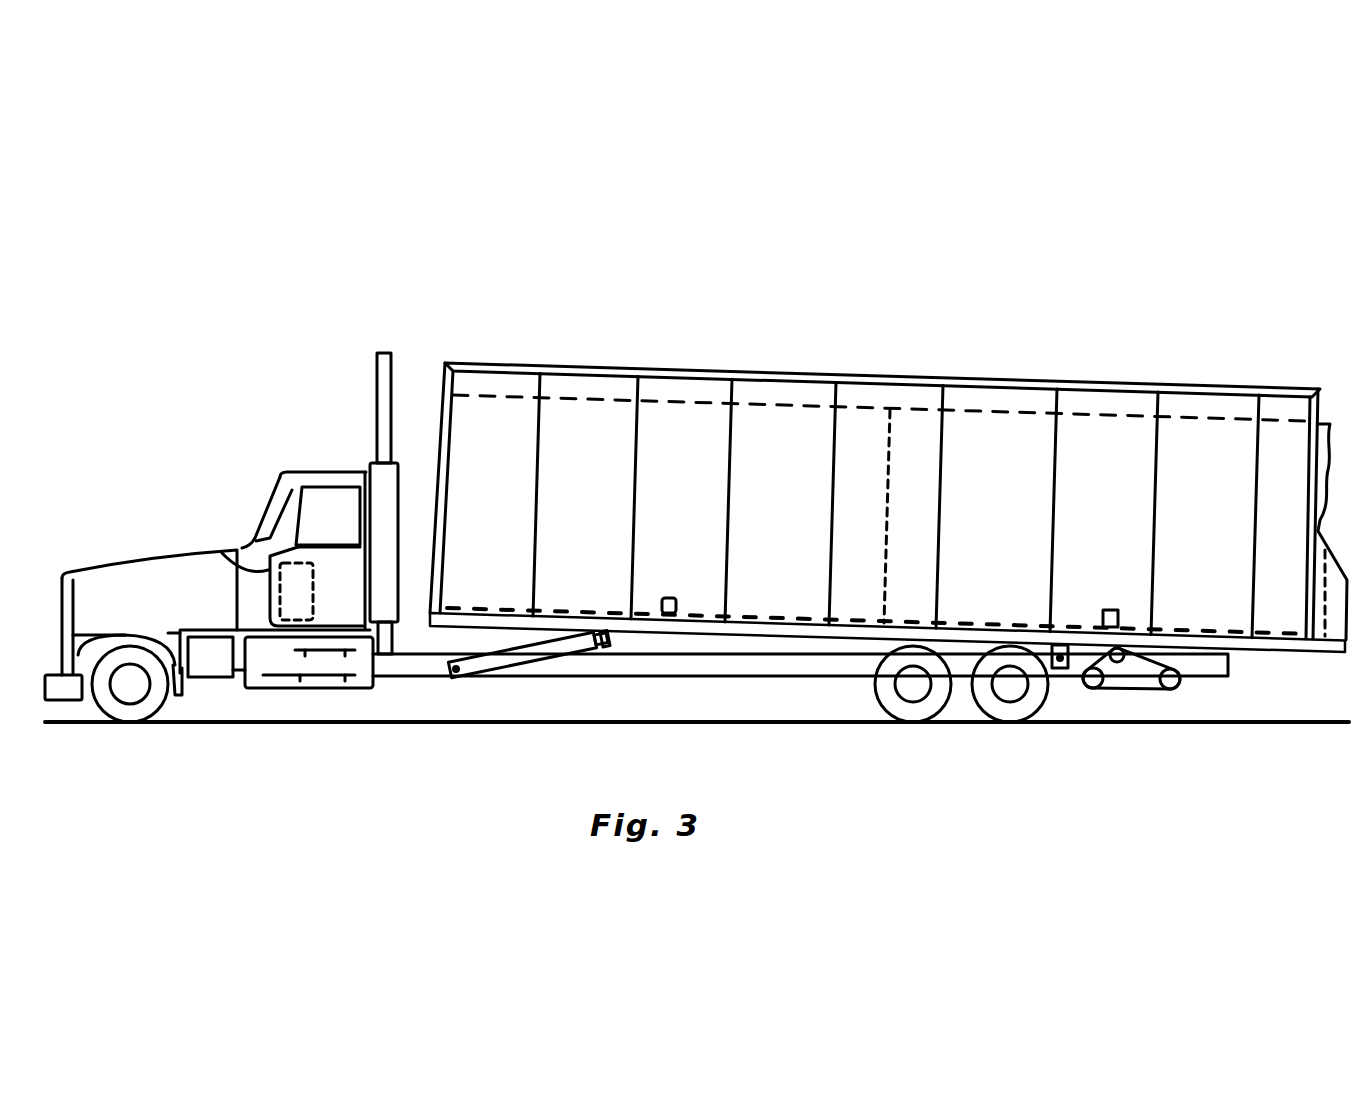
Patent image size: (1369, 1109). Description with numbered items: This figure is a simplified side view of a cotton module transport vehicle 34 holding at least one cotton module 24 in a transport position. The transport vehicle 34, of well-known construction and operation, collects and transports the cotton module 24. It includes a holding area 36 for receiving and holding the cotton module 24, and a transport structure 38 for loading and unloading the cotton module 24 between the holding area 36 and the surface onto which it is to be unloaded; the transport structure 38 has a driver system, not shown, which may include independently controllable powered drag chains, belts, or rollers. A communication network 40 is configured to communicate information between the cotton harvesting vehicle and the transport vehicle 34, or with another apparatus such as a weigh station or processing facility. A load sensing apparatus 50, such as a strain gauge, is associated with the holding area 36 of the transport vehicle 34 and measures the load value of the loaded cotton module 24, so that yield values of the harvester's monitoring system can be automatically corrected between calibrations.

The cotton module 24 is at (592, 392).
The cotton module transport vehicle 34 is at (1030, 300).
The holding area 36 is at (817, 368).
The transport structure 38 is at (1224, 651).
The communication network 40 is at (240, 572).
The load sensing apparatus 50 is at (669, 598).